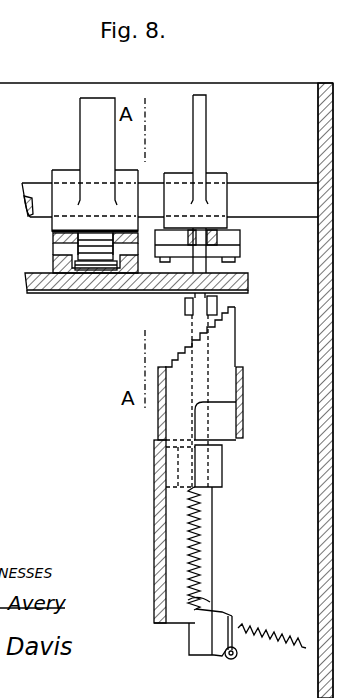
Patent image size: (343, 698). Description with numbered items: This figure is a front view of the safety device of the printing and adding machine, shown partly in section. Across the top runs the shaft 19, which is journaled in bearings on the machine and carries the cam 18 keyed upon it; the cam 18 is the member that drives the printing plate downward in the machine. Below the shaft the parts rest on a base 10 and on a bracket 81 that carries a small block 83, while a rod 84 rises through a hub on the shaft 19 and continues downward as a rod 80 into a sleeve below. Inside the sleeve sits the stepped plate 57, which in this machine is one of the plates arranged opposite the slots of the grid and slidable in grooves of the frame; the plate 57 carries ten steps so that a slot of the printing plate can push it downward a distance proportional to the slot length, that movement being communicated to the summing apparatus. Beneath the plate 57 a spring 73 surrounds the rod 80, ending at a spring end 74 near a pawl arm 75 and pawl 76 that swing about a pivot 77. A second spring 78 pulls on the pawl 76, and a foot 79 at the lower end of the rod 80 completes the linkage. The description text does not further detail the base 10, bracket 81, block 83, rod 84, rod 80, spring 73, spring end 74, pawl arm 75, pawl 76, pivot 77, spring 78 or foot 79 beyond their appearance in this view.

The base plate 10 is at (250, 282).
The cam 18 is at (95, 185).
The shaft 19 is at (170, 200).
The stepped plate 57 is at (200, 373).
The spring 73 is at (199, 523).
The spring end 74 is at (199, 590).
The pawl arm 75 is at (223, 613).
The pawl 76 is at (230, 640).
The pivot 77 is at (235, 665).
The spring 78 is at (272, 631).
The rod foot 79 is at (215, 656).
The rod 80 is at (190, 306).
The bracket 81 is at (232, 243).
The bearing block 83 is at (240, 233).
The rod 84 is at (206, 135).